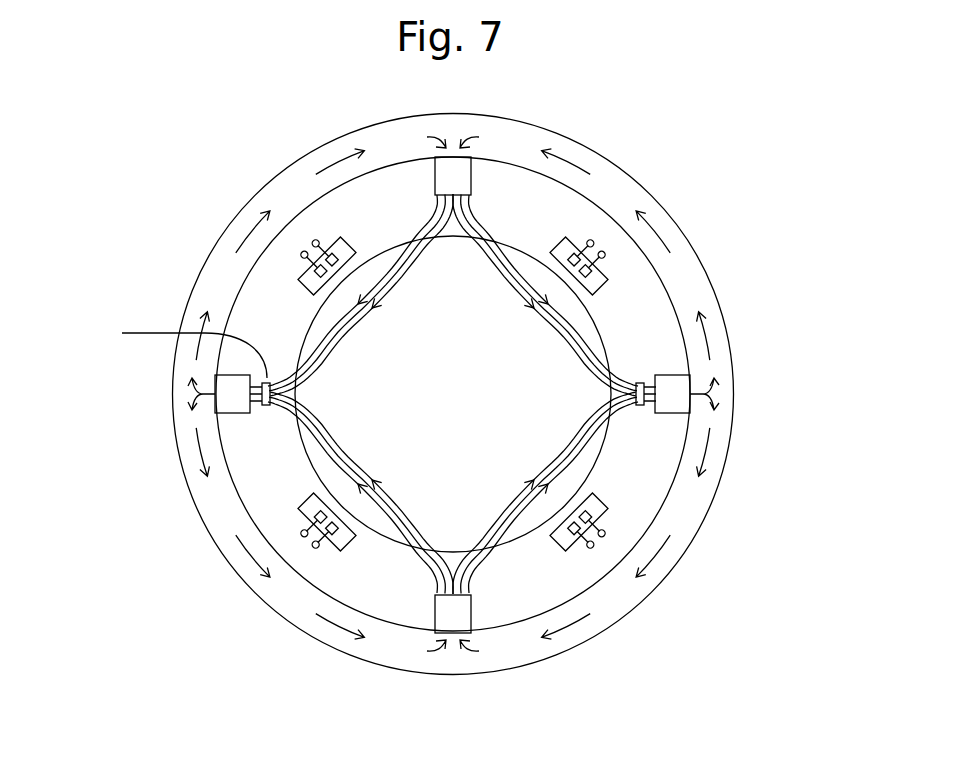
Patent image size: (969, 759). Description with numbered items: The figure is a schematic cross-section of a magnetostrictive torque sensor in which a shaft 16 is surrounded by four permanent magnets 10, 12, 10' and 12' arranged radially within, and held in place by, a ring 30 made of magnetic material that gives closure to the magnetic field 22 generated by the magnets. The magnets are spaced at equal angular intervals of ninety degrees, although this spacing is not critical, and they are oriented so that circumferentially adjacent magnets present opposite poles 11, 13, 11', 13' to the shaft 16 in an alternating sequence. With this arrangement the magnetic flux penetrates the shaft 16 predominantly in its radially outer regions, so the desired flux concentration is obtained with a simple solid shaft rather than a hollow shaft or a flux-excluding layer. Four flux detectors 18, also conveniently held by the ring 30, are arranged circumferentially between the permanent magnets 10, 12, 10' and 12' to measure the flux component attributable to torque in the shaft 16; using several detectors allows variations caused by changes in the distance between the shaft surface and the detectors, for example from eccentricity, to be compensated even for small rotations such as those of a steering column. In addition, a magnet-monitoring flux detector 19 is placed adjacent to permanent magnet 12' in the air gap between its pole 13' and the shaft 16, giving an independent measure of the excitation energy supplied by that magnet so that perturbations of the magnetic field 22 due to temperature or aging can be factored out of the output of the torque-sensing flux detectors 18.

The permanent magnet 10 is at (500, 139).
The permanent magnet 10' is at (520, 652).
The magnet pole 11 is at (556, 253).
The magnet pole 11' is at (360, 560).
The permanent magnet 12 is at (730, 431).
The permanent magnet 12' is at (165, 421).
The magnet pole 13 is at (720, 360).
The magnet pole 13' is at (194, 452).
The shaft 16 is at (369, 545).
The flux detector 18 is at (305, 283).
The magnet-monitoring flux detector 19 is at (174, 347).
The magnetic field 22 is at (427, 213).
The ring 30 is at (290, 192).